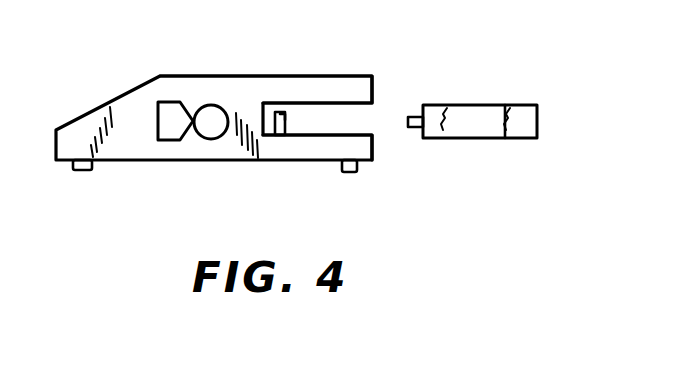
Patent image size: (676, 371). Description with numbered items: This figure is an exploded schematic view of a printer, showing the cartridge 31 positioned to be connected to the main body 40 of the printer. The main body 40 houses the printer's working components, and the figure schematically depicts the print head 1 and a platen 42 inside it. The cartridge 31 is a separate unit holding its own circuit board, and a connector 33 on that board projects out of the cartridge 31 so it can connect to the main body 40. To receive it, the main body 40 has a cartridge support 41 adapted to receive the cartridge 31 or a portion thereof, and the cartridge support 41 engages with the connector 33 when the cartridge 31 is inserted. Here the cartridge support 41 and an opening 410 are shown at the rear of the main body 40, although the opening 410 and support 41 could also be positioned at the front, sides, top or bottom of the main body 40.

The print head 1 is at (160, 118).
The main body 40 is at (355, 87).
The cartridge support 41 is at (284, 113).
The platen 42 is at (212, 108).
The opening 410 is at (363, 122).
The cartridge 31 is at (505, 107).
The connector 33 is at (413, 115).